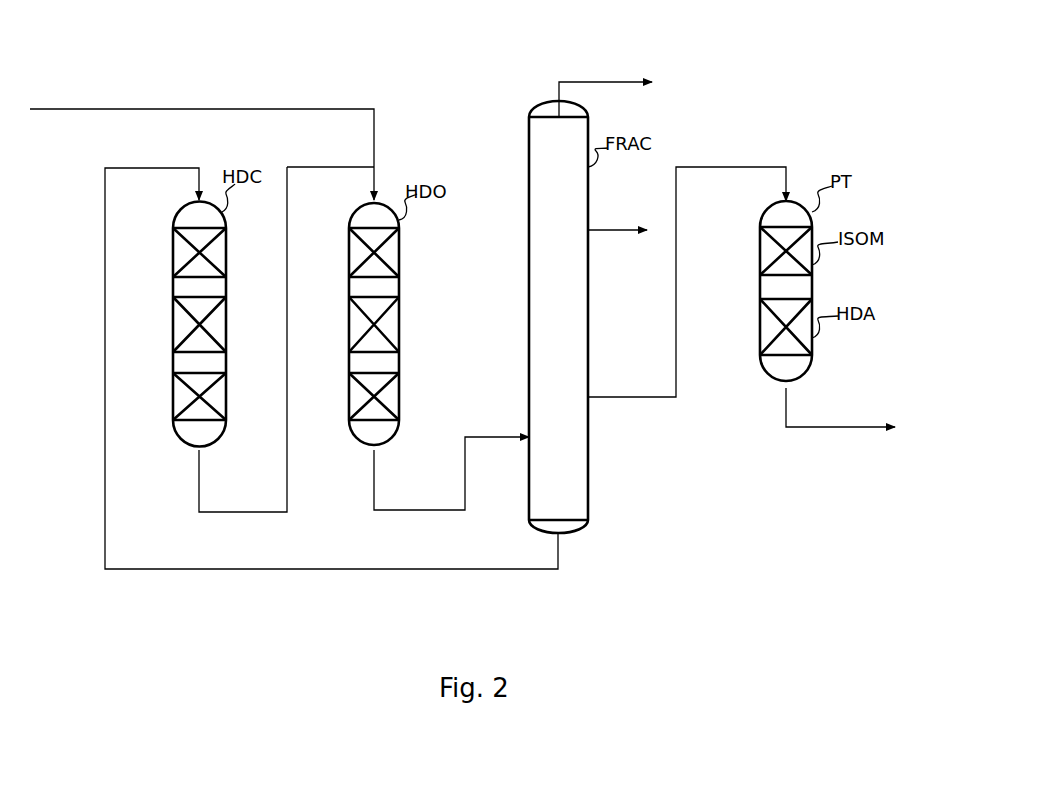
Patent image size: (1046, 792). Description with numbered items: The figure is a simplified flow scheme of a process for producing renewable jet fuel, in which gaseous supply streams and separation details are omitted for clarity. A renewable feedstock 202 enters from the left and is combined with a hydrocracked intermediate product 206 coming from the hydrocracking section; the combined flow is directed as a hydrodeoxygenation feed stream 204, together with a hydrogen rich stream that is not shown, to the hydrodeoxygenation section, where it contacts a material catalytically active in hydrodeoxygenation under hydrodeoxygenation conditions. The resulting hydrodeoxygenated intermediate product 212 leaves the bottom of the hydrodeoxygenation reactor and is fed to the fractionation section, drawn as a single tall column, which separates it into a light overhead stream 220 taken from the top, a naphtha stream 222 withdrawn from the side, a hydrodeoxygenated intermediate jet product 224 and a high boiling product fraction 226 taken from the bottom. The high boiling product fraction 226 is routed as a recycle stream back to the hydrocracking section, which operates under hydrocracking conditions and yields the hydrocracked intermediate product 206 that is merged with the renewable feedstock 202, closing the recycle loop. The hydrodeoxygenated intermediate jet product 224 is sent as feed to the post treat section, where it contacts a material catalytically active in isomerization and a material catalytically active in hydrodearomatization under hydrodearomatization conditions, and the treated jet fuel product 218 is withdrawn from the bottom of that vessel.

The renewable feedstock 202 is at (57, 109).
The hydrodeoxygenation feed stream 204 is at (374, 185).
The hydrocracked intermediate product 206 is at (287, 398).
The hydrodeoxygenated intermediate product 212 is at (374, 490).
The treated jet fuel product 218 is at (805, 427).
The light overhead stream 220 is at (583, 82).
The naphtha stream 222 is at (610, 230).
The hydrodeoxygenated intermediate jet product 224 is at (676, 378).
The high boiling product fraction 226 is at (128, 569).